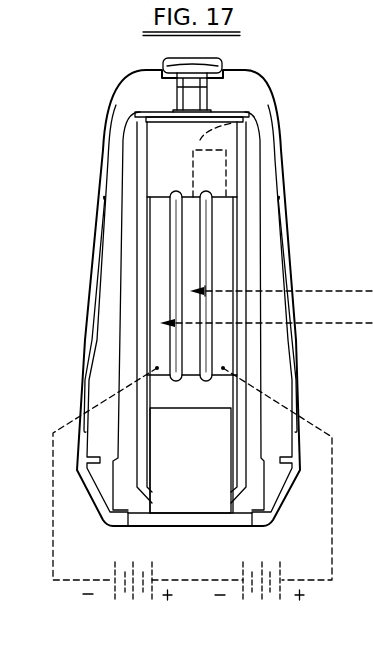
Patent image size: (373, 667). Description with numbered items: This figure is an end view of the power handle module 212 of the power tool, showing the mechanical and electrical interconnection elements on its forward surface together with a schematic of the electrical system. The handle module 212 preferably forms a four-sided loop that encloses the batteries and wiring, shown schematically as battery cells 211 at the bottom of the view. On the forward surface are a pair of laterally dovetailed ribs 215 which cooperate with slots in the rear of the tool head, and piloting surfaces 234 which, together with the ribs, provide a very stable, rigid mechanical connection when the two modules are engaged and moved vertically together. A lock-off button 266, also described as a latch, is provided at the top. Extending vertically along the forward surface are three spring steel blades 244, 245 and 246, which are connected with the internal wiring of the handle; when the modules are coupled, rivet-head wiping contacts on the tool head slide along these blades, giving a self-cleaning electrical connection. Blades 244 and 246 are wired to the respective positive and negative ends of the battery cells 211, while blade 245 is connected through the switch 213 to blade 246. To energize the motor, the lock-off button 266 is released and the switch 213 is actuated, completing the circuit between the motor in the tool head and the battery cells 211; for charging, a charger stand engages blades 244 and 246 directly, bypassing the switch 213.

The power handle module 212 is at (123, 68).
The lock-off button 266 is at (216, 61).
The switch 213 is at (245, 122).
The dovetailed ribs 215 is at (131, 318).
The piloting surfaces 234 is at (147, 183).
The spring blade 244 is at (160, 270).
The spring blade 245 is at (193, 240).
The spring blade 246 is at (223, 258).
The battery circuit 211 is at (123, 608).